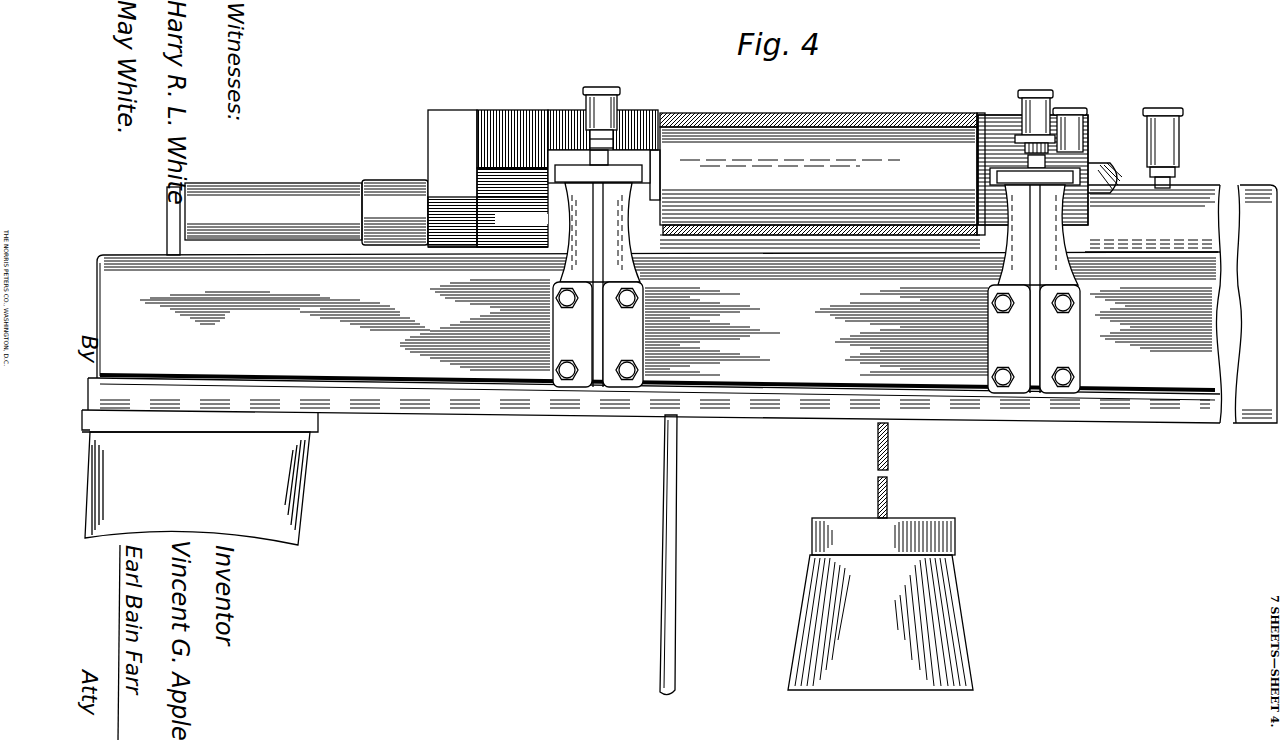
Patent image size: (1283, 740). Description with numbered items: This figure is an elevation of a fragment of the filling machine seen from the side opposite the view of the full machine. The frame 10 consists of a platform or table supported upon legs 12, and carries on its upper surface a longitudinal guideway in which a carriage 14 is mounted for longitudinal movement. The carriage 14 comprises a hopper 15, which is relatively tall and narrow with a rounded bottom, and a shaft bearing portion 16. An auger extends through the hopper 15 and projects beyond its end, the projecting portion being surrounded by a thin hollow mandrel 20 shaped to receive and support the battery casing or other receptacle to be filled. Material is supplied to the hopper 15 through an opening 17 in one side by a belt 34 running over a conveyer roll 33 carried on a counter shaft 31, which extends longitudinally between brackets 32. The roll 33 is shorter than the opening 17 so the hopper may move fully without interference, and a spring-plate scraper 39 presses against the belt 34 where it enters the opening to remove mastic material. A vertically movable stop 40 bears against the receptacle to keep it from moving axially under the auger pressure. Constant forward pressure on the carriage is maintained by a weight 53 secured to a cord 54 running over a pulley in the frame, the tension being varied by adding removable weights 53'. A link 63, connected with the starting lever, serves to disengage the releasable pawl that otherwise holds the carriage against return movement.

The frame 10 is at (480, 364).
The legs 12 is at (293, 478).
The carriage 14 is at (1143, 258).
The hopper 15 is at (460, 153).
The shaft bearing portion 16 is at (1243, 185).
The opening 17 is at (478, 123).
The hollow mandrel 20 is at (280, 200).
The counter shaft 31 is at (1110, 163).
The brackets 32 is at (643, 280).
The conveyer roll 33 is at (817, 180).
The belt 34 is at (807, 120).
The scraper 39 is at (505, 175).
The stop 40 is at (170, 198).
The weight 53 is at (896, 622).
The removable weights 53' is at (909, 536).
The cord 54 is at (888, 495).
The link 63 is at (675, 515).